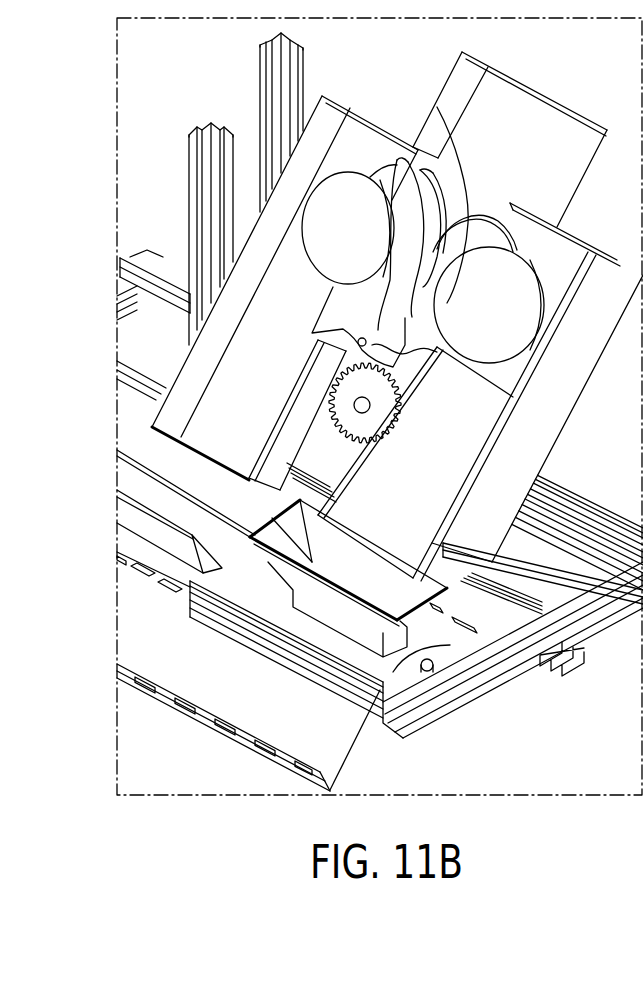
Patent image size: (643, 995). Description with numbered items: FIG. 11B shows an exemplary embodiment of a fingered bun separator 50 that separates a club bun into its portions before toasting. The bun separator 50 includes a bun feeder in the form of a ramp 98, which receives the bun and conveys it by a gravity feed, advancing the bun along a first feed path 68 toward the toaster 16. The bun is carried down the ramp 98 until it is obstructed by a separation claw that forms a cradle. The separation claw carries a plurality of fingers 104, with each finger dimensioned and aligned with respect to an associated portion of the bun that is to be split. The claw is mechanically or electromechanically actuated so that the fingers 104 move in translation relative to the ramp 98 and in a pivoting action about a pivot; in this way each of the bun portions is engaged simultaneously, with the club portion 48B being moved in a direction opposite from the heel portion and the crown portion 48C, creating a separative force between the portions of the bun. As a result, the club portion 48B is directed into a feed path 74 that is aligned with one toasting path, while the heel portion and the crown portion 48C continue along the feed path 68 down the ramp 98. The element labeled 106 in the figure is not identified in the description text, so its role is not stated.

The toaster 16 is at (253, 583).
The bun separator 50 is at (380, 88).
The first feed path 68 is at (270, 303).
The fingers 104 is at (437, 193).
The ramp 98 is at (516, 218).
The crown portion 48C is at (368, 244).
The club portion 48B is at (503, 315).
The pivot link 106 is at (366, 345).
The feed path 74 is at (430, 425).